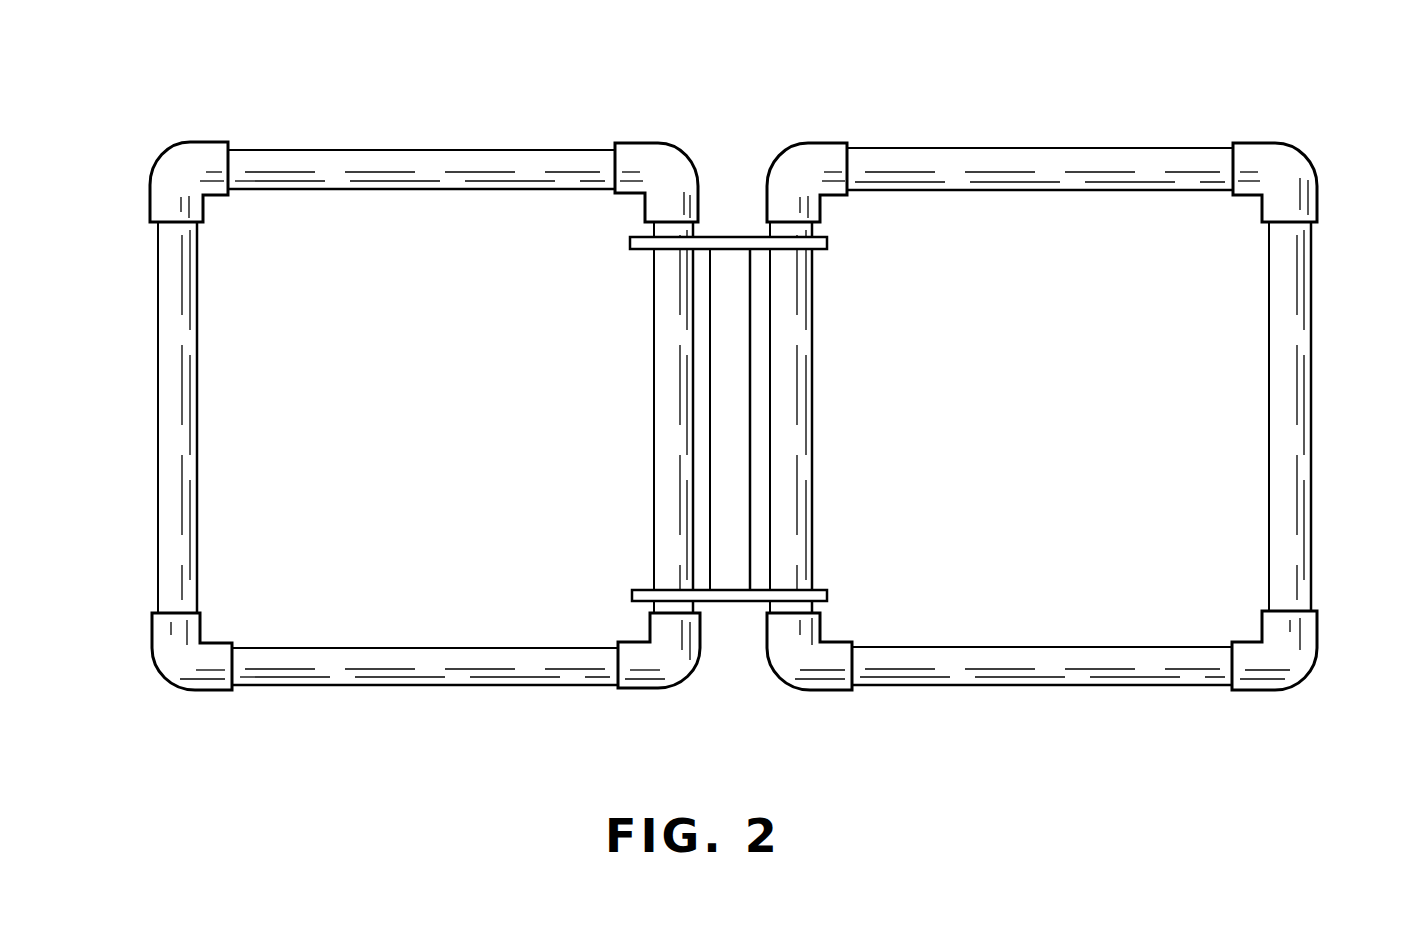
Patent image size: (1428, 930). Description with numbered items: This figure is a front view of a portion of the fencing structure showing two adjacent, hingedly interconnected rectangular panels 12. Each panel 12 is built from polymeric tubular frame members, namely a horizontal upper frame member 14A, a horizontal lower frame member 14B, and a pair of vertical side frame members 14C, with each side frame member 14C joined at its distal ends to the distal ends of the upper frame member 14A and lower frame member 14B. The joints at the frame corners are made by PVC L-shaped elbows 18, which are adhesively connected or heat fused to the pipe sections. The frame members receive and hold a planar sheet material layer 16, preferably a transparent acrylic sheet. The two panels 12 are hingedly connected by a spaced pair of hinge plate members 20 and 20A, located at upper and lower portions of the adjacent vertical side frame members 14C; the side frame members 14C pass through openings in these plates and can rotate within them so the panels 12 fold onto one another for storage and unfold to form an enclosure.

The rectangular panel 12 is at (429, 112).
The horizontal upper frame member 14A is at (543, 148).
The horizontal lower frame member 14B is at (495, 660).
The vertical side frame member 14C is at (170, 345).
The planar sheet material layer 16 is at (454, 358).
The L-shaped elbow 18 is at (162, 155).
The hinge plate member 20 is at (721, 236).
The hinge plate member 20A is at (737, 602).